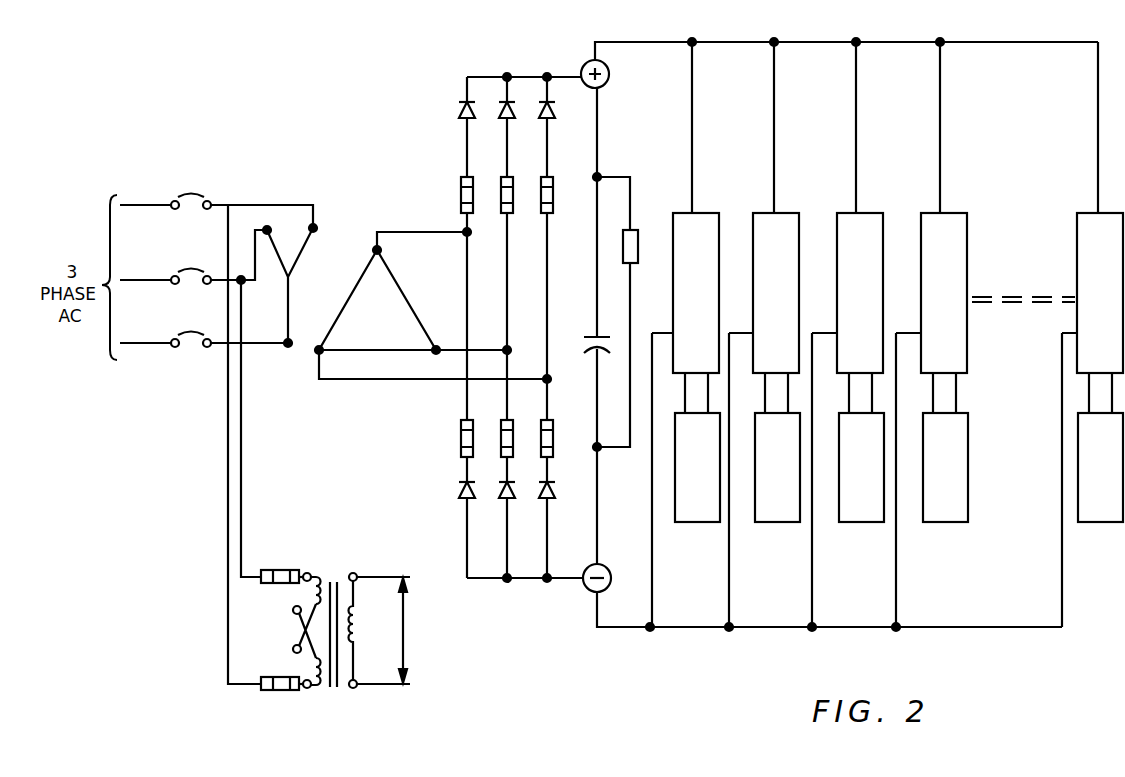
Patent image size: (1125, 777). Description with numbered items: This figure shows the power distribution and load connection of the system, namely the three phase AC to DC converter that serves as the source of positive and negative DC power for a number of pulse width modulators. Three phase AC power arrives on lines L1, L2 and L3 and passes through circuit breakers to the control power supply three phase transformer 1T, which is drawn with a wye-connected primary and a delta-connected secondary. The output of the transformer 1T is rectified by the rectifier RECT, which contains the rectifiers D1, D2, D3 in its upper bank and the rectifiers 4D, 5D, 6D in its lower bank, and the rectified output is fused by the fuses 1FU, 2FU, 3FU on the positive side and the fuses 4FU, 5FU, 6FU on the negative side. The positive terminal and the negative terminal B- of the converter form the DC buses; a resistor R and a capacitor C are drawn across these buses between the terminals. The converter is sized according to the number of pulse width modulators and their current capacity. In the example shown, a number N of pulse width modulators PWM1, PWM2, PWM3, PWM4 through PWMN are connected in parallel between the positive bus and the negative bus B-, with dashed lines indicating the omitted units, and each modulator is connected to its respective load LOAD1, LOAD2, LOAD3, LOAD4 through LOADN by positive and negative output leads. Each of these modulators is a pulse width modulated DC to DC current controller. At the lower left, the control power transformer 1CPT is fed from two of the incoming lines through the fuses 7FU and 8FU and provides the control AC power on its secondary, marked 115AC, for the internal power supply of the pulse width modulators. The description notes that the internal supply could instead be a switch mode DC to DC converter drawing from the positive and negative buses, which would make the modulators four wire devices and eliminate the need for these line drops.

The line L1 is at (216, 206).
The line L2 is at (193, 257).
The line L3 is at (204, 333).
The three phase transformer 1T is at (351, 266).
The rectifier RECT is at (522, 314).
The rectifier D1 is at (477, 121).
The rectifier D2 is at (517, 121).
The rectifier D3 is at (557, 121).
The fuse 1FU is at (484, 209).
The fuse 2FU is at (523, 209).
The fuse 3FU is at (564, 209).
The fuse 4FU is at (483, 428).
The fuse 5FU is at (523, 428).
The fuse 6FU is at (563, 428).
The rectifier 4D is at (477, 511).
The rectifier 5D is at (517, 511).
The rectifier 6D is at (557, 511).
The B- DC power B- is at (607, 571).
The bleeder resistor R is at (626, 312).
The filter capacitor C is at (587, 342).
The pulse width modulator PWM1 is at (685, 334).
The pulse width modulator PWM2 is at (764, 334).
The pulse width modulator PWM3 is at (847, 334).
The pulse width modulator PWM4 is at (931, 334).
The pulse width modulator PWMN is at (1092, 334).
The load LOAD1 is at (697, 467).
The load LOAD2 is at (777, 467).
The load LOAD3 is at (861, 467).
The load LOAD4 is at (945, 467).
The load LOADN is at (1100, 467).
The control fuse 7FU is at (279, 563).
The control fuse 8FU is at (280, 696).
The control power transformer 1CPT is at (331, 619).
The 115 VAC line 115AC is at (395, 630).